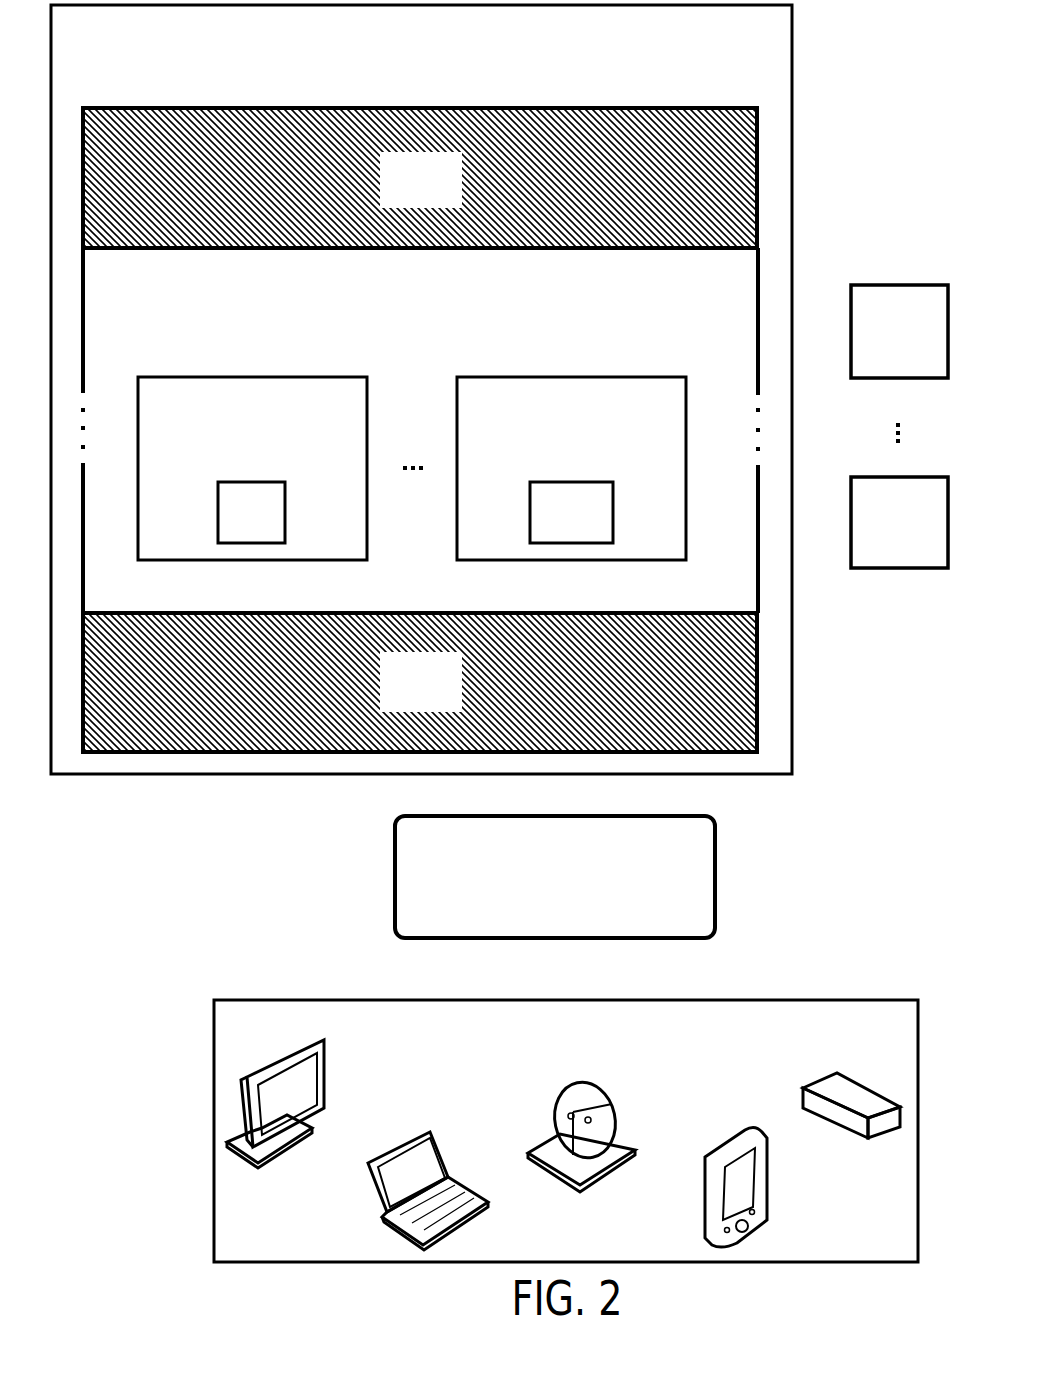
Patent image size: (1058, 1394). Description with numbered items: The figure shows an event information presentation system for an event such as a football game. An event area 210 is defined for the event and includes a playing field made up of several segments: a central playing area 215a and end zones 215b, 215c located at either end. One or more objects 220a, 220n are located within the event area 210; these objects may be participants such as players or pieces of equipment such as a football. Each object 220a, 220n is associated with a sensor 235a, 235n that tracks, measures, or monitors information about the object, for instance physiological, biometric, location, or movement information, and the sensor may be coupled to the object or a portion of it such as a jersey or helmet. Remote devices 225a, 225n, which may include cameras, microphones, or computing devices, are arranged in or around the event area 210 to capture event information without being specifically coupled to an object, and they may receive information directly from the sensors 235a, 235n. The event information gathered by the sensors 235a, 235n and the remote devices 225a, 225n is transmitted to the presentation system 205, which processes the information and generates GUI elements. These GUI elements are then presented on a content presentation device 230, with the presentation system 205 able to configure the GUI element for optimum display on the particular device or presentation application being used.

The presentation system 205 is at (537, 889).
The event area 210 is at (401, 41).
The playing area 215a is at (397, 321).
The end zone 215b is at (397, 191).
The end zone 215c is at (397, 694).
The object 220a is at (229, 412).
The object 220n is at (548, 412).
The remote device 225a is at (876, 342).
The remote device 225n is at (876, 534).
The content presentation device 230 is at (549, 1032).
The sensor 235a is at (229, 524).
The sensor 235n is at (548, 524).